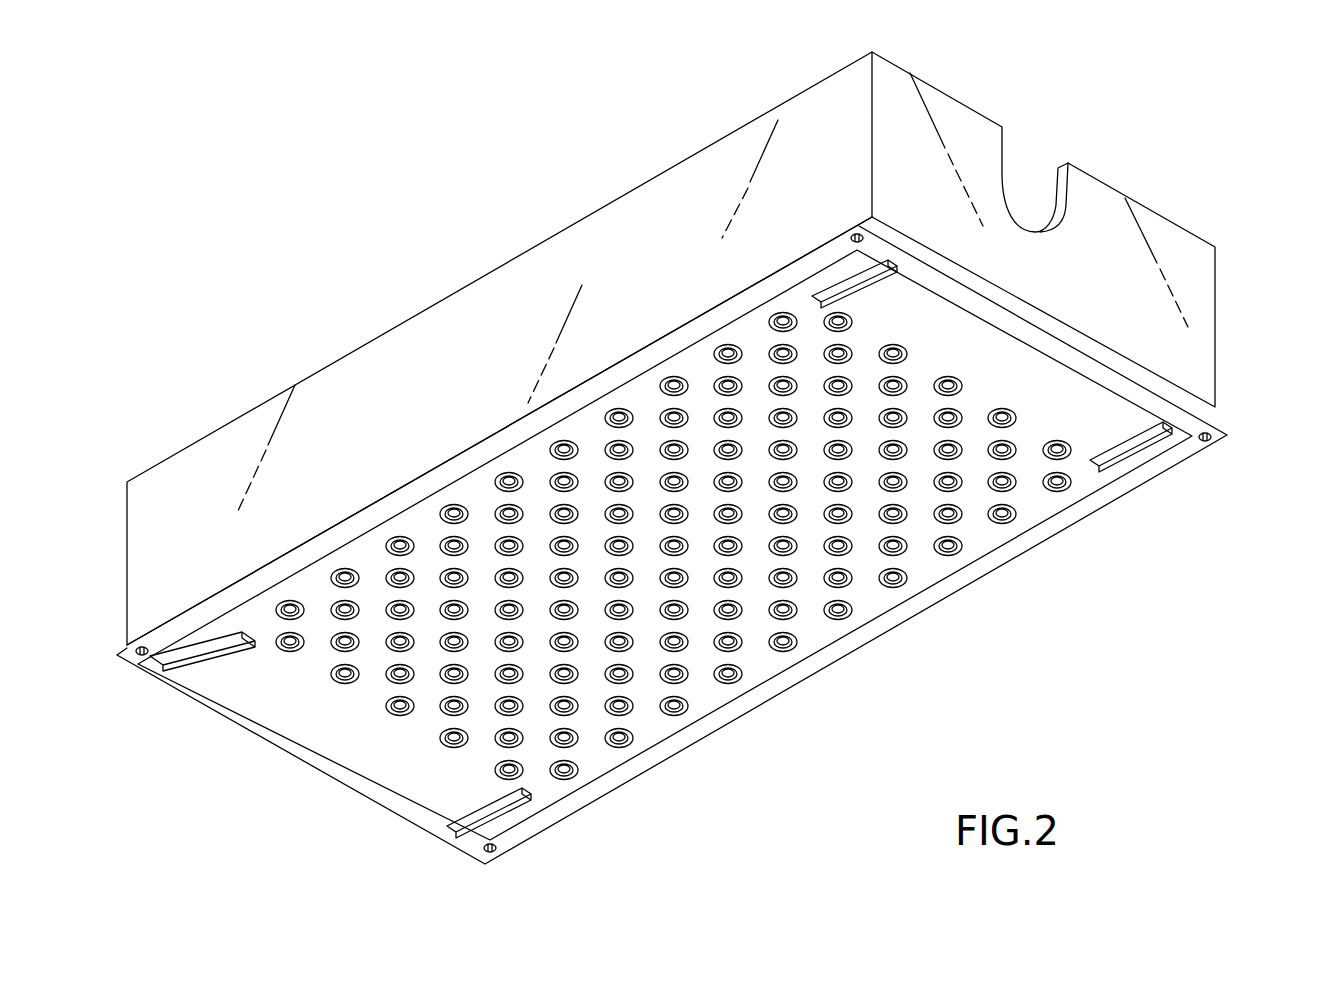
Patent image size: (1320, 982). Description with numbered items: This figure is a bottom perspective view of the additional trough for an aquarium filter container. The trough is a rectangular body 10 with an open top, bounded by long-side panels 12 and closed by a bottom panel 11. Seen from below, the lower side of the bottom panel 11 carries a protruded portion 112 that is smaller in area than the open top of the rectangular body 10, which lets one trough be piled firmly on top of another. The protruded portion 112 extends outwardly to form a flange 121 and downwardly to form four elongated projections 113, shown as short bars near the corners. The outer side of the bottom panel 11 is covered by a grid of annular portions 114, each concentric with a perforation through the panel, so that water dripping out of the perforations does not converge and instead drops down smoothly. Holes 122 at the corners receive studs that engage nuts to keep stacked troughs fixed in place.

The rectangular body 10 is at (366, 330).
The bottom panel 11 is at (306, 770).
The long-side panel 12 is at (597, 250).
The protruded portion 112 is at (262, 698).
The elongated projection 113 is at (207, 668).
The annular portion 114 is at (838, 620).
The flange 121 is at (160, 628).
The hole 122 is at (853, 230).